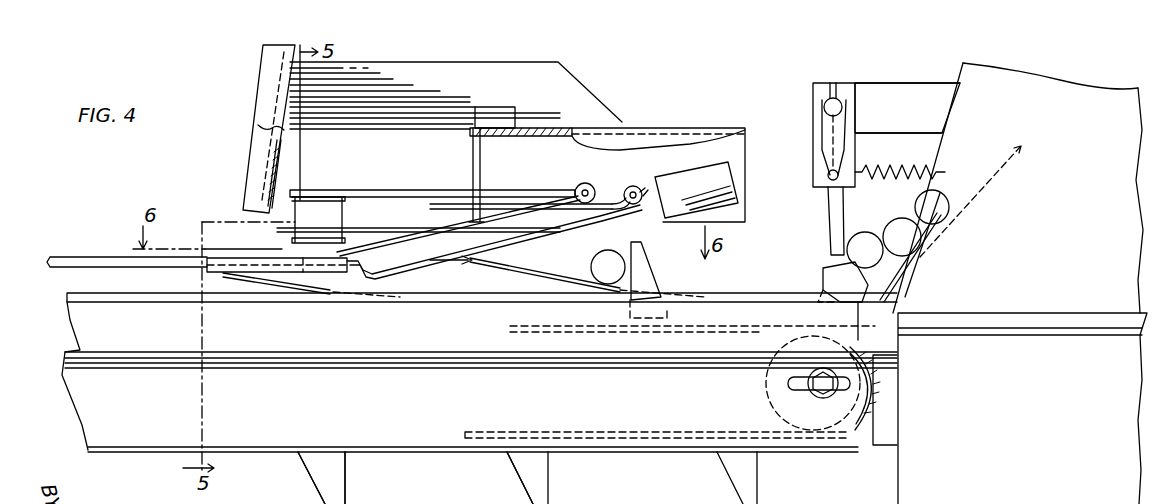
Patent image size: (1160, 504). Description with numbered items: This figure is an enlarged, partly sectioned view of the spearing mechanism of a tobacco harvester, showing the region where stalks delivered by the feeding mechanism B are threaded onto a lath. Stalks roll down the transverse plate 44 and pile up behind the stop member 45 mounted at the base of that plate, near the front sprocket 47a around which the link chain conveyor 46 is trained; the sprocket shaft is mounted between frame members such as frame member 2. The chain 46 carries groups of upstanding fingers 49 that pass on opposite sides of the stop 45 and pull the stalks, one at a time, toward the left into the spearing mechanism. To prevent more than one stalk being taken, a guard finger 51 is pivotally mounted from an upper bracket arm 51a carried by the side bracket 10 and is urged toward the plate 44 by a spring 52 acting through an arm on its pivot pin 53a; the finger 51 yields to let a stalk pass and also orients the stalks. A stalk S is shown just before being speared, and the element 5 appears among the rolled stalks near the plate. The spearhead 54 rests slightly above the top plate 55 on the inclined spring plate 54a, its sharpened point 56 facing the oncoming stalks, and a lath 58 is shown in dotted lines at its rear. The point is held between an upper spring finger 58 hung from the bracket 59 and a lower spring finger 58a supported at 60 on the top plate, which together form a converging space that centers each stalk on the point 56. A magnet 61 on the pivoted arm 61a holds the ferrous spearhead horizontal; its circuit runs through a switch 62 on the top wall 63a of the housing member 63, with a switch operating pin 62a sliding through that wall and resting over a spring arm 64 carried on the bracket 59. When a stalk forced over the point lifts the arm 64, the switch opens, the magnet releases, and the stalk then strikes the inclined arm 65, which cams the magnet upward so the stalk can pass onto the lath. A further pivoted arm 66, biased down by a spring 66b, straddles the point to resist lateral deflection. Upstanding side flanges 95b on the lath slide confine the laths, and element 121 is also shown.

The frame member 2 is at (390, 436).
The roll 5 is at (600, 267).
The side bracket 10 is at (1052, 98).
The transverse plate 44 is at (990, 183).
The stop member 45 is at (825, 272).
The link chain conveyor 46 is at (748, 330).
The sprocket 47a is at (870, 392).
The fingers 49 is at (345, 497).
The guard finger 51 is at (830, 215).
The upper bracket arm 51a is at (898, 100).
The spring 52 is at (905, 160).
The pivot pin 53a is at (840, 100).
The spearhead 54 is at (340, 270).
The spring plate 54a is at (290, 292).
The top plate 55 is at (128, 304).
The pointed end 56 is at (470, 266).
The spring finger 58 is at (545, 245).
The spring finger 58a is at (550, 292).
The bracket 59 is at (690, 188).
The support 60 is at (700, 286).
The magnet member 61 is at (310, 205).
The pivoted arm 61a is at (405, 196).
The switch member 62 is at (494, 99).
The switch operating pin 62a is at (481, 182).
The housing member 63 is at (728, 138).
The top wall 63a is at (570, 128).
The spring arm 64 is at (370, 219).
The arm 65 is at (430, 230).
The pivotally mounted arm 66 is at (448, 268).
The spring 66b is at (624, 188).
The upstanding side flanges 95b is at (66, 293).
The plate 121 is at (262, 150).
The feeding mechanism B is at (663, 120).